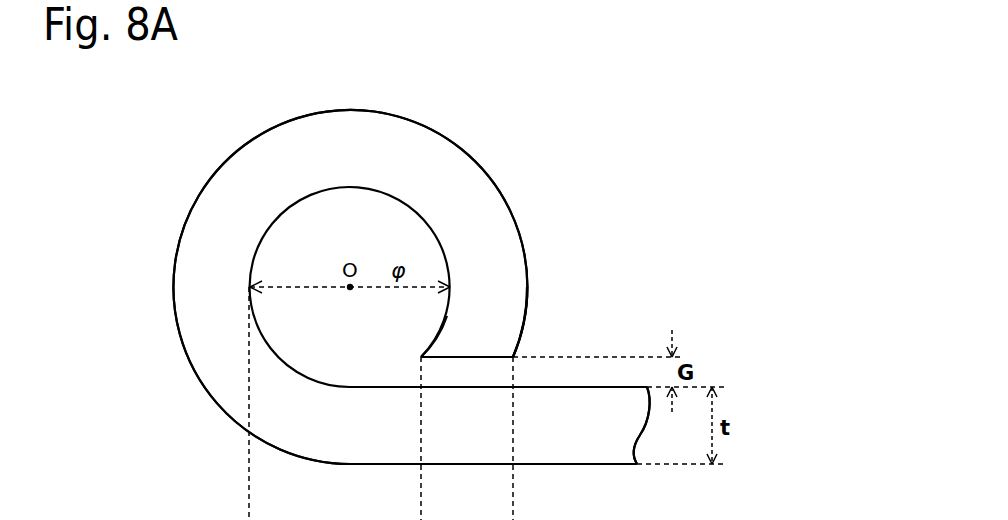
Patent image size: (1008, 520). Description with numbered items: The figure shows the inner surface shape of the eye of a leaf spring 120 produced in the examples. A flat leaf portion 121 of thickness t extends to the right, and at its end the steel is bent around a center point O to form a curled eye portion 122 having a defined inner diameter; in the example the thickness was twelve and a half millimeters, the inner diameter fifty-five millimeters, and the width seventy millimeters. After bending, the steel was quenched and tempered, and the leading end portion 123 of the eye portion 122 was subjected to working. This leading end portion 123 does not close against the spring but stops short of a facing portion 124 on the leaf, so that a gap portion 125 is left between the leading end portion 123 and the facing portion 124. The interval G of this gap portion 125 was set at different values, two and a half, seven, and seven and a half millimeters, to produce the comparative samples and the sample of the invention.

The leaf spring 120 is at (520, 158).
The leaf portion 121 is at (577, 443).
The eye portion 122 is at (302, 138).
The leading end portion 123 is at (480, 357).
The facing portion 124 is at (472, 443).
The gap portion 125 is at (490, 377).